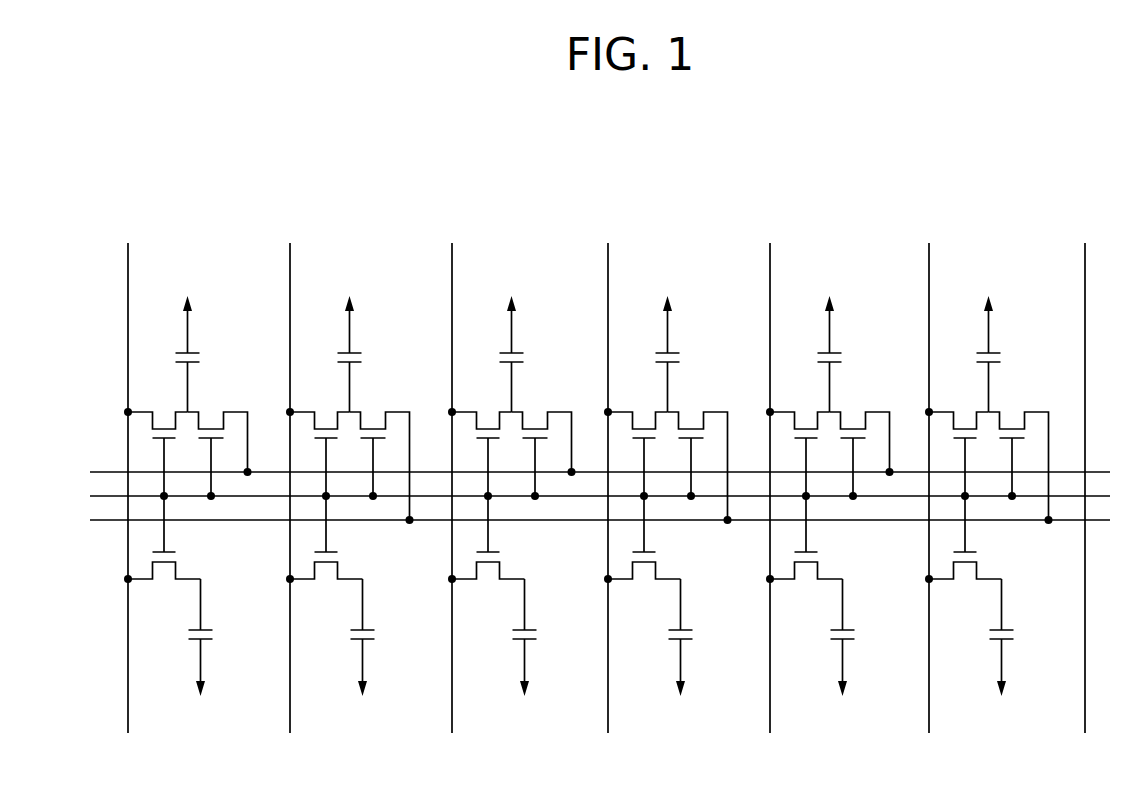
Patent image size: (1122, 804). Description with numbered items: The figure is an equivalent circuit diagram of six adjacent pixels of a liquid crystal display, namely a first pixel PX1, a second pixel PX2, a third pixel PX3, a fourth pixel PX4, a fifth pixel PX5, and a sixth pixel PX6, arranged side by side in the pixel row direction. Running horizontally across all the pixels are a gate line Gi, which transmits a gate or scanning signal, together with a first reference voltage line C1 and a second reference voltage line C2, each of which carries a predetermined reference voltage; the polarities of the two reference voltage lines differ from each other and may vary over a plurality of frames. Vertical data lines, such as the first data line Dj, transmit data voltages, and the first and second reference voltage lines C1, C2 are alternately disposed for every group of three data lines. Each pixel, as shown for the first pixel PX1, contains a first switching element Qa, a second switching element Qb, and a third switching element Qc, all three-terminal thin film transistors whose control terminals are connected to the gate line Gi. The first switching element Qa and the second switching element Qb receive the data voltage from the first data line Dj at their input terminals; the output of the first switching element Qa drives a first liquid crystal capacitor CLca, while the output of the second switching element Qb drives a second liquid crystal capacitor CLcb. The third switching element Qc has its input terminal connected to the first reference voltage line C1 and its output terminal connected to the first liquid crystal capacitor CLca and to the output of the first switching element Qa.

The first data line Dj is at (128, 471).
The first pixel PX1 is at (182, 236).
The second pixel PX2 is at (344, 236).
The third pixel PX3 is at (506, 236).
The fourth pixel PX4 is at (662, 236).
The fifth pixel PX5 is at (824, 236).
The sixth pixel PX6 is at (983, 236).
The gate line Gi is at (588, 495).
The first reference voltage line C1 is at (587, 470).
The second reference voltage line C2 is at (587, 519).
The first switching element Qa is at (556, 444).
The second switching element Qb is at (563, 550).
The third switching element Qc is at (620, 456).
The first liquid crystal capacitor CLca is at (613, 354).
The second liquid crystal capacitor CLcb is at (627, 637).